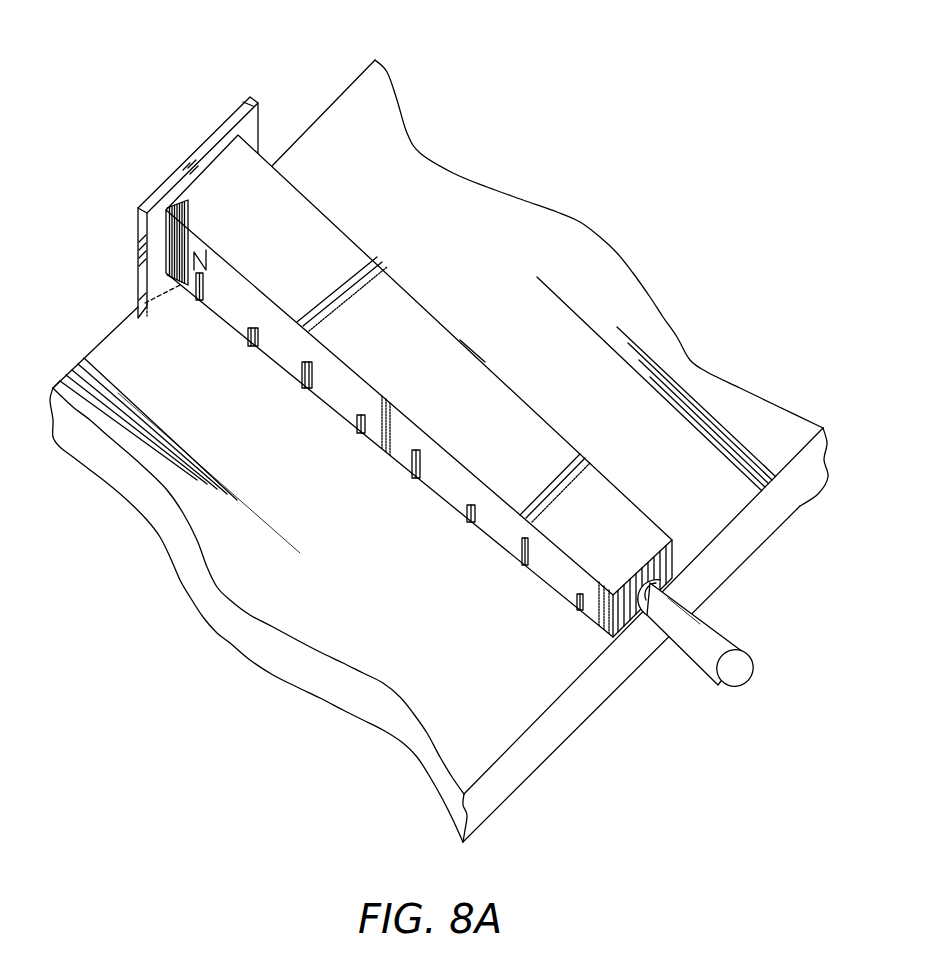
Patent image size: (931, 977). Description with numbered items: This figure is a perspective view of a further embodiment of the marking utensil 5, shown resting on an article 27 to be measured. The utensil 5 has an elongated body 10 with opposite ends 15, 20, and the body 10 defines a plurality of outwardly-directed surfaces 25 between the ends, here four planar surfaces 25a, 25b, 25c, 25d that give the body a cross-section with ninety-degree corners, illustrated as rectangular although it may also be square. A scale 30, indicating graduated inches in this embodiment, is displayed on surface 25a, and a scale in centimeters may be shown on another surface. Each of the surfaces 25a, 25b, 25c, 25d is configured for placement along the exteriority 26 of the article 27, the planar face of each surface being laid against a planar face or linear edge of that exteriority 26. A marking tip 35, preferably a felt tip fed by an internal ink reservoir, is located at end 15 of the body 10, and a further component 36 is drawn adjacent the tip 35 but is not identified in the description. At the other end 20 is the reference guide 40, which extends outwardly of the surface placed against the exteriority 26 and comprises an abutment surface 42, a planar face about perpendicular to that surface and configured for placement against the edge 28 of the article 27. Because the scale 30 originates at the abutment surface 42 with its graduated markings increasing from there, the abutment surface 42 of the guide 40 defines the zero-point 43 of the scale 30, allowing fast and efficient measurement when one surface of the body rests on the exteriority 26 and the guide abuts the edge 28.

The marking utensil 5 is at (411, 386).
The elongated body 10 is at (552, 450).
The end 15 is at (638, 657).
The end 20 is at (137, 311).
The outwardly-directed surfaces 25 is at (643, 498).
The planar surface 25a is at (275, 347).
The planar surface 25b is at (352, 425).
The planar surface 25c is at (370, 263).
The planar surface 25d is at (486, 362).
The exteriority 26 is at (466, 644).
The article 27 is at (758, 403).
The edge 28 is at (348, 84).
The scale 30 is at (197, 307).
The marking tip 35 is at (717, 605).
The knob 36 is at (735, 637).
The reference guide 40 is at (160, 183).
The abutment surface 42 is at (252, 127).
The zero-point 43 is at (137, 270).